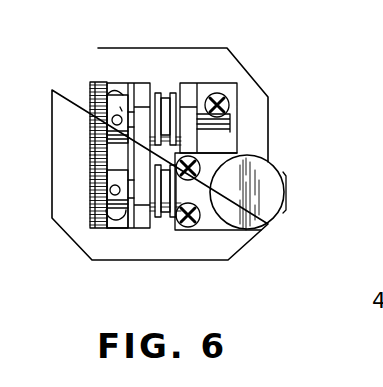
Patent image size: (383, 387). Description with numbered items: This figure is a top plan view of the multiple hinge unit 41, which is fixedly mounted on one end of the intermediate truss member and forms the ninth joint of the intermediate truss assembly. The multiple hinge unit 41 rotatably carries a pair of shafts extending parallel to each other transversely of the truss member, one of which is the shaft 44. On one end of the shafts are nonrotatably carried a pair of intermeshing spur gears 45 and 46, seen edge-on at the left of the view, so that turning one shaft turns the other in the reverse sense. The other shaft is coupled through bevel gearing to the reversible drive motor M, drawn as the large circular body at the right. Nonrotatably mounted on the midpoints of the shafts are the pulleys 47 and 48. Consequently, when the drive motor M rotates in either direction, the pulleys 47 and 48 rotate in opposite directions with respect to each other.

The multiple hinge unit 41 is at (117, 252).
The shaft 44 is at (237, 122).
The spur gear 45 is at (88, 200).
The spur gear 46 is at (90, 103).
The pulley 47 is at (164, 213).
The pulley 48 is at (165, 96).
The reversible drive motor M is at (270, 213).